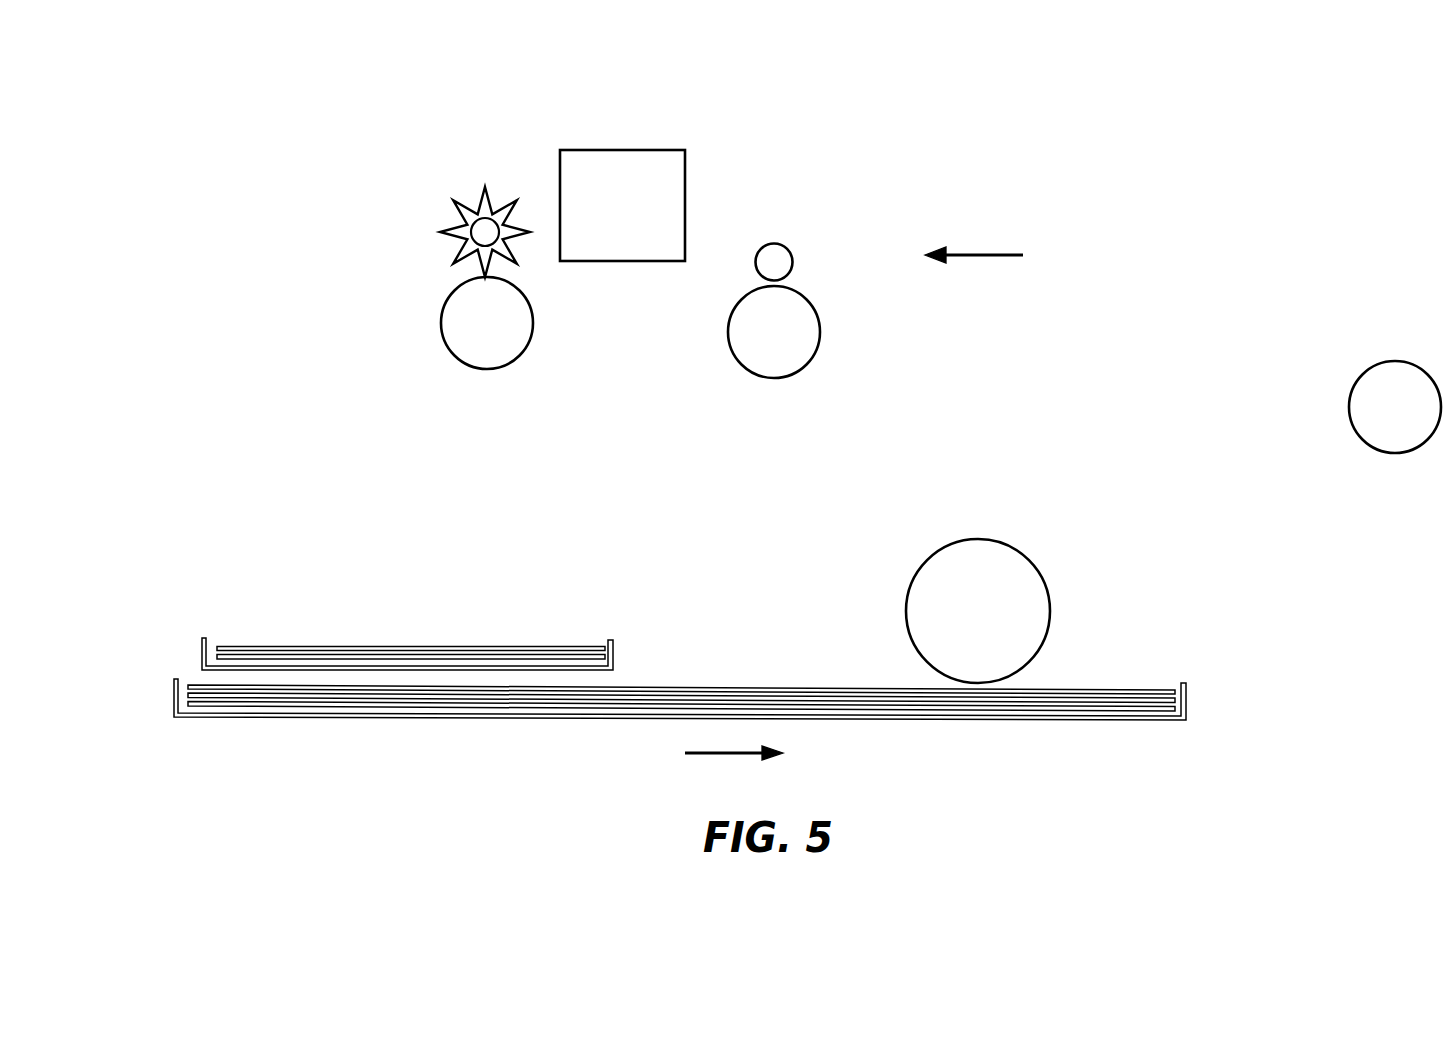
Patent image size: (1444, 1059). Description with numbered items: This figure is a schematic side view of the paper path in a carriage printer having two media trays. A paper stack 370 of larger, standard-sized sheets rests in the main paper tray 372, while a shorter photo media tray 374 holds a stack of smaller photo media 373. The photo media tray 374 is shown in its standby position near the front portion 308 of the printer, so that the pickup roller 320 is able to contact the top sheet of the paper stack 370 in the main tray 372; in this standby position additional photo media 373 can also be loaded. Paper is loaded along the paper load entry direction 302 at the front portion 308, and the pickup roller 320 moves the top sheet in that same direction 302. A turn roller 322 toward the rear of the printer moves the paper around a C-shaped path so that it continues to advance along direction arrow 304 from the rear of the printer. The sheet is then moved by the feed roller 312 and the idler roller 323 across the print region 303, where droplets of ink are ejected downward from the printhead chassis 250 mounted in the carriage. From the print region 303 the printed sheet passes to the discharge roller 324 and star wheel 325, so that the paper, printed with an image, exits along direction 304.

The printhead chassis 250 is at (622, 150).
The star wheel 325 is at (478, 200).
The discharge roller 324 is at (442, 330).
The print region 303 is at (683, 272).
The idler roller 323 is at (777, 243).
The feed roller 312 is at (820, 340).
The direction arrow 304 is at (980, 252).
The turn roller 322 is at (1348, 415).
The pickup roller 320 is at (920, 567).
The front portion 308 is at (160, 662).
The photo media stack 373 is at (480, 648).
The photo media tray 374 is at (615, 651).
The paper stack 370 is at (1108, 690).
The main paper tray 372 is at (1186, 701).
The paper load entry direction 302 is at (727, 755).